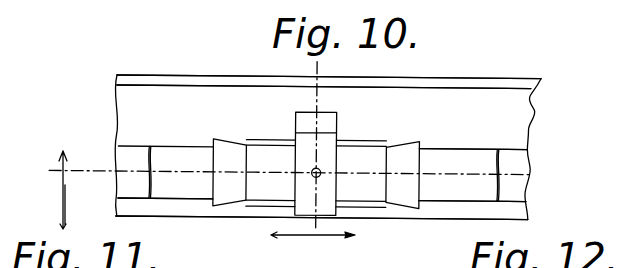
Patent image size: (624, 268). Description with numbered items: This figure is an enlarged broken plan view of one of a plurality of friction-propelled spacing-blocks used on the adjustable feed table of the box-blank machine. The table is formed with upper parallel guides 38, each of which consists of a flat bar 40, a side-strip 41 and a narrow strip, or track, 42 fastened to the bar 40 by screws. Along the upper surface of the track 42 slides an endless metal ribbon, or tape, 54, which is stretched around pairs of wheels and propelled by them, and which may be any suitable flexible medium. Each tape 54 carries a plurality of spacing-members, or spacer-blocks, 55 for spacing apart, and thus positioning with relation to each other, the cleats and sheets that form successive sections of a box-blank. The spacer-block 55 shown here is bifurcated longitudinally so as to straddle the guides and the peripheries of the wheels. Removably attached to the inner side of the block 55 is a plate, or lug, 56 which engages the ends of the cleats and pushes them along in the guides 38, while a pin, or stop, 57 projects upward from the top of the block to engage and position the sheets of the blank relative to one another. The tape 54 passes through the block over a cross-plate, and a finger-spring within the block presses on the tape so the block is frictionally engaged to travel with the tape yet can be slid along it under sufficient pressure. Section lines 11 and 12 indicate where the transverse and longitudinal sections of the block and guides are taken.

The upper parallel guides 38 is at (327, 129).
The side-strip 41 is at (439, 82).
The flat bar 40 is at (183, 208).
The narrow strip, or track 42 is at (130, 187).
The endless metal ribbon, or tape 54 is at (470, 160).
The spacer-block 55 is at (316, 174).
The plate, or lug 56 is at (338, 117).
The pin, or stop 57 is at (312, 172).
The section line 12 is at (41, 190).
The section line 11 is at (313, 250).